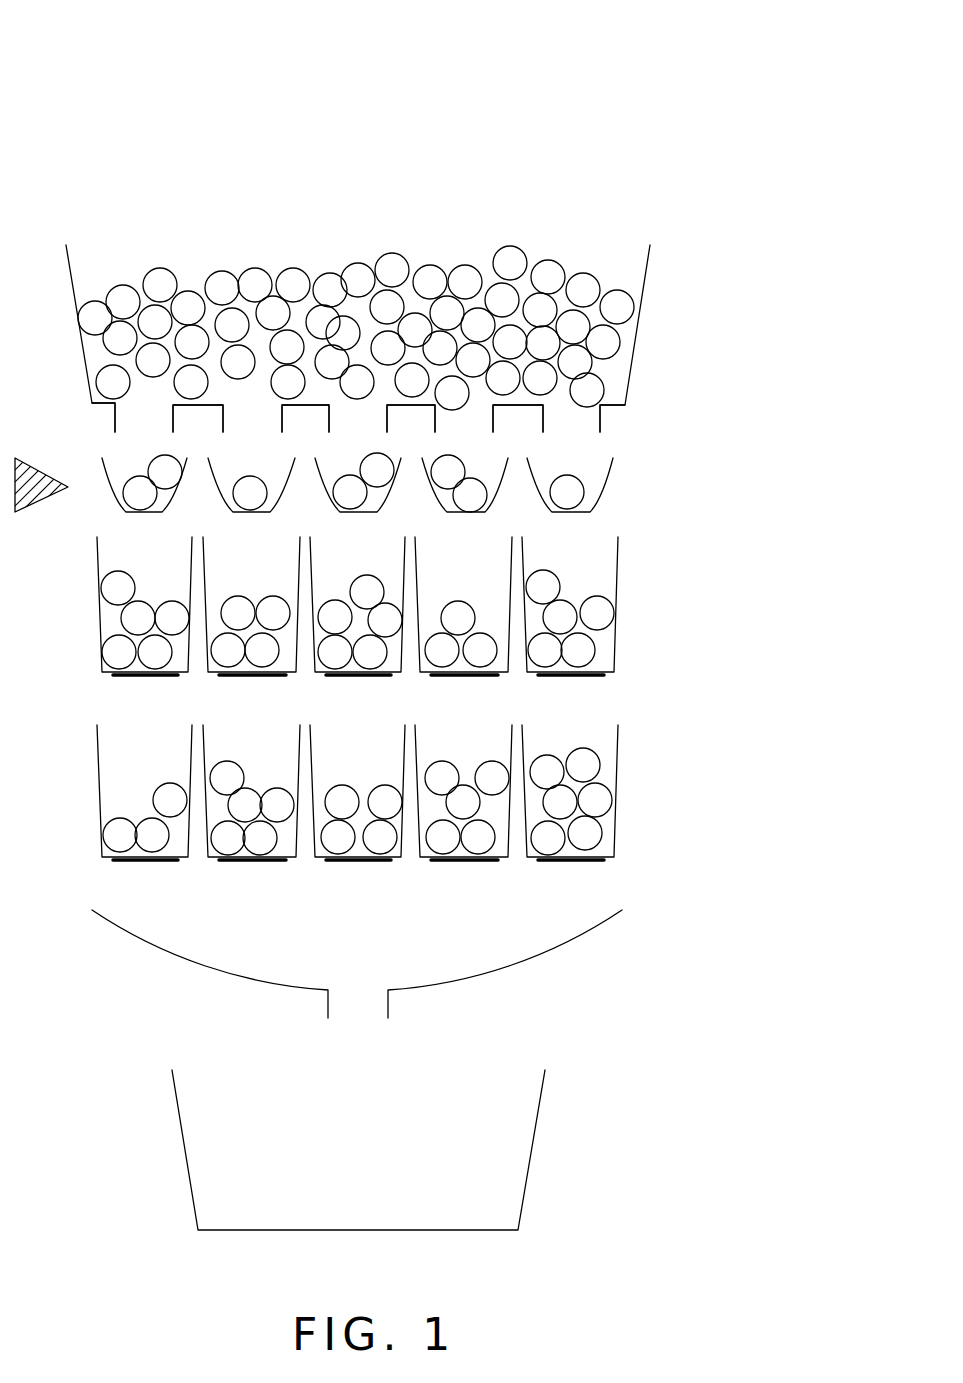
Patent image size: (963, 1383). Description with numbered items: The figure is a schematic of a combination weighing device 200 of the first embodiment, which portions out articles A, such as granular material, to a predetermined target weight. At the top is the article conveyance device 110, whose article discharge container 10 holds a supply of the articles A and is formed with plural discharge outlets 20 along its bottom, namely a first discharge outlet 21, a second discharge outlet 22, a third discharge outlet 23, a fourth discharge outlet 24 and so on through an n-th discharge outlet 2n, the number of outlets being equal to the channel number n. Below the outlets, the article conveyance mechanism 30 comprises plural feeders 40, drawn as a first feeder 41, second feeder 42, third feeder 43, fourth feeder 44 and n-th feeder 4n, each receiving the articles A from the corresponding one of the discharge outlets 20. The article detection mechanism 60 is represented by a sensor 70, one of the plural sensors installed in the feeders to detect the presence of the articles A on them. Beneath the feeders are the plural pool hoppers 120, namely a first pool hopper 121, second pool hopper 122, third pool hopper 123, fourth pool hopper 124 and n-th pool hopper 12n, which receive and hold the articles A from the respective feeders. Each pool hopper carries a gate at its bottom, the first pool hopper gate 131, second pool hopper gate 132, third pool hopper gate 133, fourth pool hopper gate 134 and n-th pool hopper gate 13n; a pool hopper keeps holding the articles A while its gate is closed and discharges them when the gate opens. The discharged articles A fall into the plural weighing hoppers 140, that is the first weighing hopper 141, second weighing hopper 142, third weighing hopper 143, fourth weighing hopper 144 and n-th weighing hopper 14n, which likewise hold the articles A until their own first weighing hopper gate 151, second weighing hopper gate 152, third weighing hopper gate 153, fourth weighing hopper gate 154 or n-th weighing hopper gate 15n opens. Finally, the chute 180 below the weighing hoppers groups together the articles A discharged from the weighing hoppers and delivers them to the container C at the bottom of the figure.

The combination weighing device 200 is at (105, 85).
The article conveyance device 110 is at (405, 286).
The article discharge container 10 is at (633, 368).
The articles A is at (508, 265).
The discharge outlets 20 is at (628, 425).
The first discharge outlet 21 is at (115, 428).
The second discharge outlet 22 is at (222, 428).
The third discharge outlet 23 is at (329, 428).
The fourth discharge outlet 24 is at (434, 428).
The n-th discharge outlet 2n is at (540, 428).
The article detection mechanism 60 is at (41, 443).
The sensors 70 is at (42, 470).
The feeders 40 is at (379, 483).
The article conveyance mechanism 30 is at (403, 483).
The first feeder 41 is at (118, 503).
The second feeder 42 is at (224, 503).
The third feeder 43 is at (332, 503).
The fourth feeder 44 is at (439, 503).
The n-th feeder 4n is at (545, 503).
The pool hoppers 120 is at (410, 629).
The first pool hopper 121 is at (103, 676).
The second pool hopper 122 is at (209, 676).
The third pool hopper 123 is at (316, 676).
The fourth pool hopper 124 is at (421, 676).
The n-th pool hopper 12n is at (528, 676).
The first pool hopper gate 131 is at (145, 677).
The second pool hopper gate 132 is at (251, 677).
The third pool hopper gate 133 is at (358, 677).
The fourth pool hopper gate 134 is at (463, 677).
The n-th pool hopper gate 13n is at (570, 677).
The weighing hoppers 140 is at (410, 815).
The first weighing hopper 141 is at (103, 861).
The second weighing hopper 142 is at (209, 861).
The third weighing hopper 143 is at (316, 861).
The fourth weighing hopper 144 is at (421, 861).
The n-th weighing hopper 14n is at (528, 861).
The first weighing hopper gate 151 is at (145, 862).
The second weighing hopper gate 152 is at (251, 862).
The third weighing hopper gate 153 is at (358, 862).
The fourth weighing hopper gate 154 is at (463, 862).
The n-th weighing hopper gate 15n is at (570, 862).
The chute 180 is at (517, 962).
The container C is at (532, 1143).